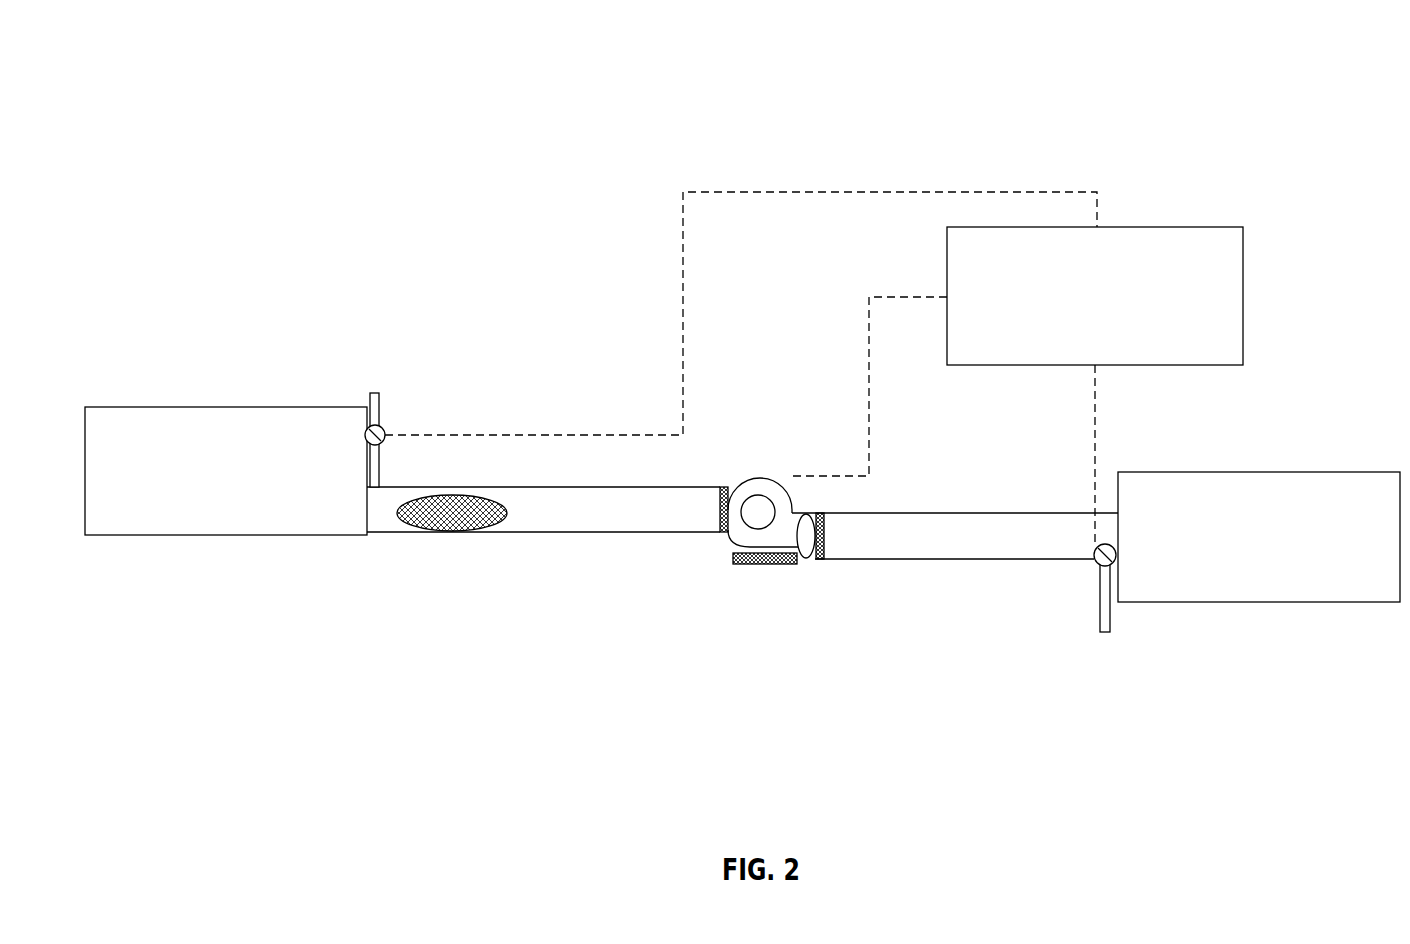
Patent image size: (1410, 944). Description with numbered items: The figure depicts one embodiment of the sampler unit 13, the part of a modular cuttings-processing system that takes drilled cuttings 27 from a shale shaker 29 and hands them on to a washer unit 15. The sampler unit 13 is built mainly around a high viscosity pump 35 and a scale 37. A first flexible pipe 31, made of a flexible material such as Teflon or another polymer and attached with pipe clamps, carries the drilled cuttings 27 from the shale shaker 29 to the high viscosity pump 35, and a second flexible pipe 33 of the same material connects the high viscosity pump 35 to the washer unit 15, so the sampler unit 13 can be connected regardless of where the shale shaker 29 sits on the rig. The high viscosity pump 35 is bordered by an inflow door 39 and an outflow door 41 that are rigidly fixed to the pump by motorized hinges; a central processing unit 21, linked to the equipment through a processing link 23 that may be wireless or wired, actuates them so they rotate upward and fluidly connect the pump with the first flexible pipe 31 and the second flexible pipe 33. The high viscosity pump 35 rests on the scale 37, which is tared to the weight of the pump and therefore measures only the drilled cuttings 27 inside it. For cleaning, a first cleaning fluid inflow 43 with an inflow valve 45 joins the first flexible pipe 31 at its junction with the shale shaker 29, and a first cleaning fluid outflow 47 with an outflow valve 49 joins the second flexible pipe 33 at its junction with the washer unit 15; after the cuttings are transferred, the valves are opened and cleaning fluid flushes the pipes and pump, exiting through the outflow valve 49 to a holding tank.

The sampler unit 13 is at (1245, 82).
The washer unit 15 is at (1244, 567).
The central processing unit 21 is at (1080, 341).
The processing link 23 is at (720, 192).
The drilled cuttings 27 is at (408, 530).
The shale shaker 29 is at (211, 500).
The first flexible pipe 31 is at (560, 547).
The second flexible pipe 33 is at (907, 565).
The high viscosity pump 35 is at (730, 541).
The scale 37 is at (777, 568).
The inflow door 39 is at (716, 505).
The outflow door 41 is at (832, 538).
The first cleaning fluid inflow 43 is at (378, 382).
The inflow valve 45 is at (362, 437).
The first cleaning fluid outflow 47 is at (1106, 636).
The outflow valve 49 is at (1088, 570).